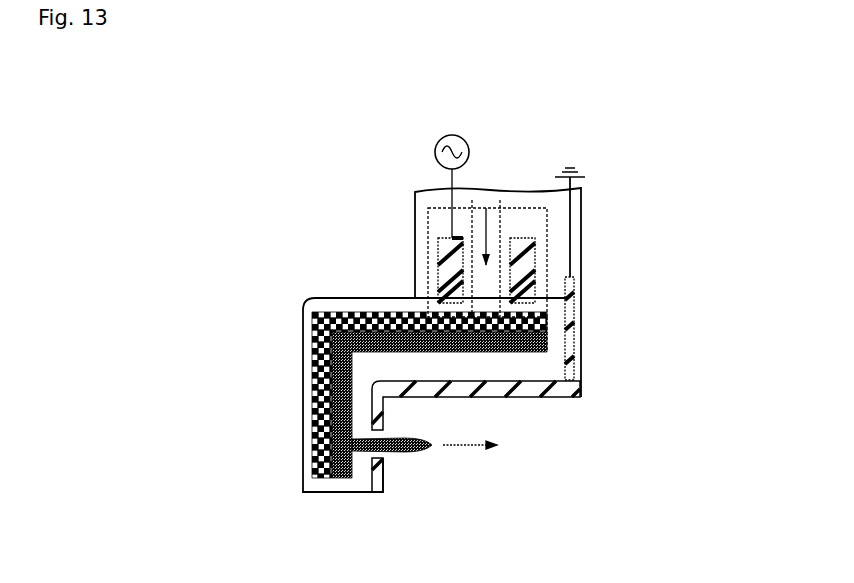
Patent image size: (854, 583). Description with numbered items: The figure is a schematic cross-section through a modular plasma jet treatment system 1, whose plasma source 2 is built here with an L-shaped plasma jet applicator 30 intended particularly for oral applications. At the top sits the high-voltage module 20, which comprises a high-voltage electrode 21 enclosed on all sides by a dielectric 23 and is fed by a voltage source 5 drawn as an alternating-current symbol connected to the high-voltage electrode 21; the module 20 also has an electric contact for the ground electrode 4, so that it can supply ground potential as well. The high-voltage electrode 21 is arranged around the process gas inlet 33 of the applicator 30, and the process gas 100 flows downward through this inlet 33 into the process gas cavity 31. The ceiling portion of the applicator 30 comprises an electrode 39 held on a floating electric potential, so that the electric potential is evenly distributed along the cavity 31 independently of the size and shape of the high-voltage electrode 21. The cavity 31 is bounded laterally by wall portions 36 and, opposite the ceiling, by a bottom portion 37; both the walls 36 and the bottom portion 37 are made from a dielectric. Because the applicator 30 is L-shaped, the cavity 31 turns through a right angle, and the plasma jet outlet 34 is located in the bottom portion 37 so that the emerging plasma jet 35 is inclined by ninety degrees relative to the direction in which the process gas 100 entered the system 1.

The system 1 is at (404, 316).
The plasma source 2 is at (606, 106).
The ground electrode 4 is at (433, 390).
The AC voltage source 5 is at (437, 137).
The high-voltage module 20 is at (368, 197).
The high-voltage electrode 21 is at (520, 257).
The dielectric 23 is at (570, 245).
The plasma jet applicator 30 is at (250, 357).
The process gas cavity 31 is at (358, 342).
The process gas inlet 33 is at (485, 297).
The plasma jet outlet 34 is at (372, 452).
The plasma jet 35 is at (410, 445).
The wall portions 36 is at (340, 478).
The bottom portion 37 is at (373, 410).
The electrode on floating electric potential 39 is at (325, 398).
The process gas 100 is at (486, 218).